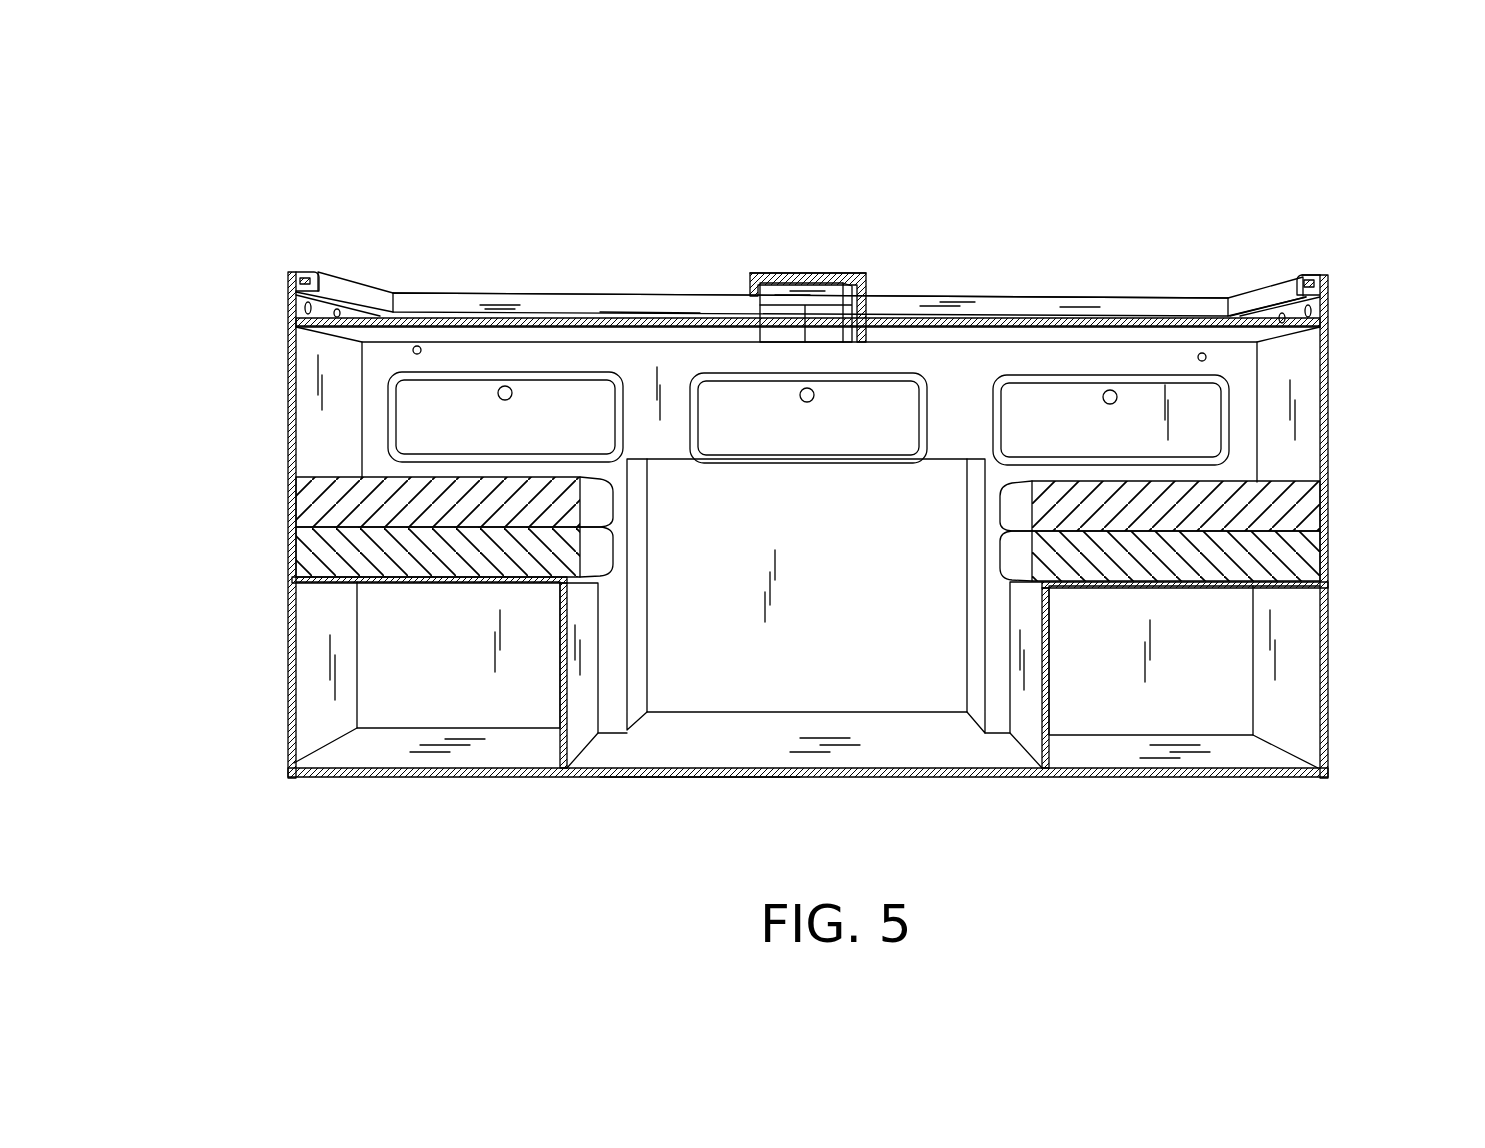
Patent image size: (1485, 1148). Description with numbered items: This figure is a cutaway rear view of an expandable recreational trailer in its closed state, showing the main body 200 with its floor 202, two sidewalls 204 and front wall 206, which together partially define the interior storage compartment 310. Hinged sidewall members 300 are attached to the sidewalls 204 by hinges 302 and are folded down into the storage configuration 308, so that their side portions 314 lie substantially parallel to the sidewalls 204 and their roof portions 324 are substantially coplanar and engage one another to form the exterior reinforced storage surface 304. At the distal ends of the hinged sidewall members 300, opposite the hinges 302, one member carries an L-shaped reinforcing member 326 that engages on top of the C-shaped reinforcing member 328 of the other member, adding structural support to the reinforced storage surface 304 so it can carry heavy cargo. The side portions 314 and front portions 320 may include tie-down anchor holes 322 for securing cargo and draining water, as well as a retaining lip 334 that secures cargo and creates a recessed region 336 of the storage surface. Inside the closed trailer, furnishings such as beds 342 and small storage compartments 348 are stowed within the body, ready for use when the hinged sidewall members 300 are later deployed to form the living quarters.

The main body 200 is at (1392, 168).
The floor 202 is at (952, 747).
The sidewalls 204 is at (305, 660).
The front wall 206 is at (887, 687).
The hinged sidewall members 300 is at (294, 405).
The hinges 302 is at (290, 567).
The reinforced storage surface 304 is at (550, 322).
The storage configuration 308 is at (1030, 188).
The interior storage compartment 310 is at (714, 805).
The side portions 314 is at (316, 362).
The front portions 320 is at (385, 358).
The tie-down anchor holes 322 is at (1310, 315).
The roof portions 324 is at (478, 333).
The L-shaped reinforcing member 326 is at (842, 276).
The C-shaped reinforcing member 328 is at (777, 275).
The retaining lip 334 is at (632, 307).
The recessed region 336 is at (406, 290).
The beds 342 is at (315, 504).
The small storage compartments 348 is at (872, 405).